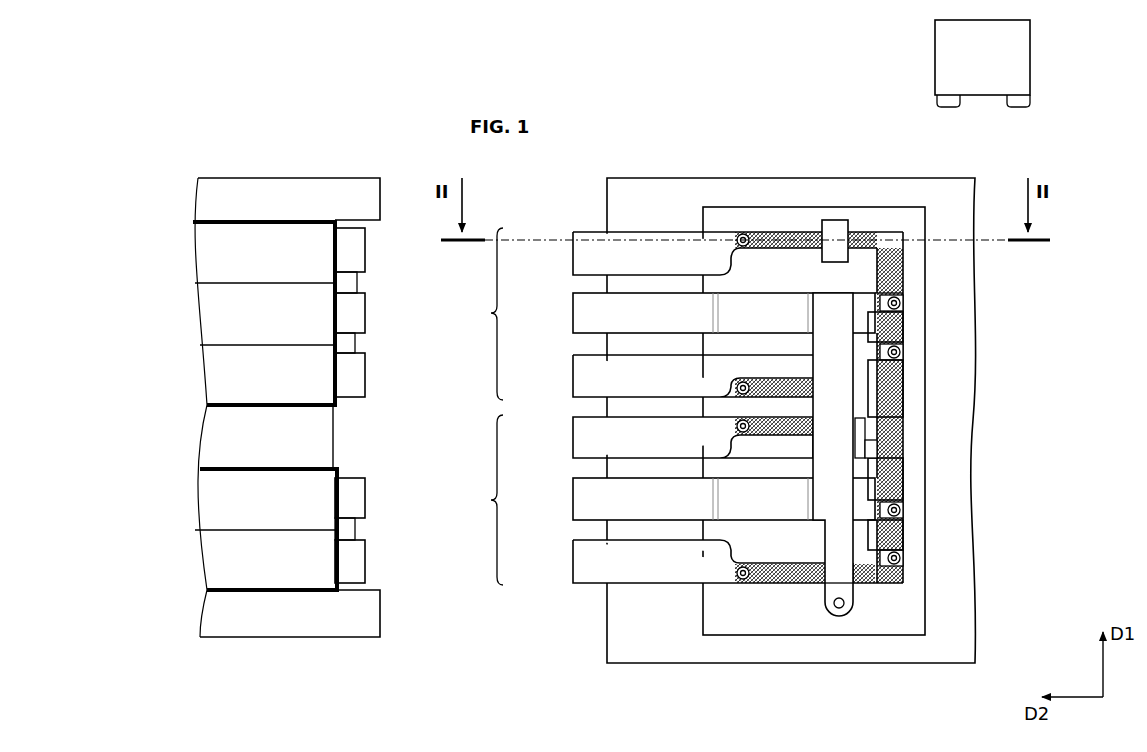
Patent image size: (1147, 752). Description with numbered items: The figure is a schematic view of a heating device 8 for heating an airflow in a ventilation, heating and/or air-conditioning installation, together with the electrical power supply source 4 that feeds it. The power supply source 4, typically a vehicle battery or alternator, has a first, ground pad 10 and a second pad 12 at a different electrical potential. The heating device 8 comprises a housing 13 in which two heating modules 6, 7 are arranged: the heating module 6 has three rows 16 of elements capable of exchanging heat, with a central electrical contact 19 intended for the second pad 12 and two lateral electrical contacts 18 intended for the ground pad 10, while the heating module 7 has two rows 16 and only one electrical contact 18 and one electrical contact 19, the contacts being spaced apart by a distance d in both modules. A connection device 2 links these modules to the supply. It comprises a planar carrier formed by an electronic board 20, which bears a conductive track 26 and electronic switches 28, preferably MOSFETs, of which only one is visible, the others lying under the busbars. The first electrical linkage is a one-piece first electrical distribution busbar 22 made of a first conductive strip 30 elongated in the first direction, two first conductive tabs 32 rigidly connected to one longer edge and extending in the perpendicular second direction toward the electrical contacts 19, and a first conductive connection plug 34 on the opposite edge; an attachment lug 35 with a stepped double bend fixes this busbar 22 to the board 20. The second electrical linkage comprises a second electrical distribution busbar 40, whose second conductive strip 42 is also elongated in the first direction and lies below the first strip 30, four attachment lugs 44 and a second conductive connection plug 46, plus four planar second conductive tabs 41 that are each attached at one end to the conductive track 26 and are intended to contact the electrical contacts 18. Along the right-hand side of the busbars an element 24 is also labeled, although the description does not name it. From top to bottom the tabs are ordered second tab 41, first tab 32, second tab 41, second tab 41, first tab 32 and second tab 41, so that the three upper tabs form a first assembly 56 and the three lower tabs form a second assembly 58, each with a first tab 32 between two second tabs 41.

The connection device 2 is at (787, 616).
The electrical power supply source 4 is at (982, 57).
The heating module 6 is at (235, 216).
The heating module 7 is at (235, 598).
The heating device 8 is at (537, 601).
The first, ground pad 10 is at (946, 108).
The second pad 12 is at (1018, 108).
The housing 13 is at (898, 655).
The rows of elements capable of exchanging heat 16 is at (222, 357).
The electrical contact 18 is at (352, 247).
The electrical contact 19 is at (352, 312).
The electronic board 20 is at (905, 607).
The first electrical distribution busbar 22 is at (840, 400).
The clamping block 24 is at (880, 332).
The conductive track 26 is at (775, 236).
The switch 28 is at (838, 228).
The first conductive strip 30 is at (833, 454).
The first conductive tab 32 is at (590, 313).
The first conductive connection plug 34 is at (872, 452).
The attachment lug 35 is at (843, 620).
The second electrical distribution busbar 40 is at (855, 540).
The second conductive tab 41 is at (592, 245).
The second conductive strip 42 is at (890, 551).
The attachment lug 44 is at (903, 300).
The second conductive connection plug 46 is at (866, 442).
The first assembly 56 is at (480, 314).
The second assembly 58 is at (480, 500).